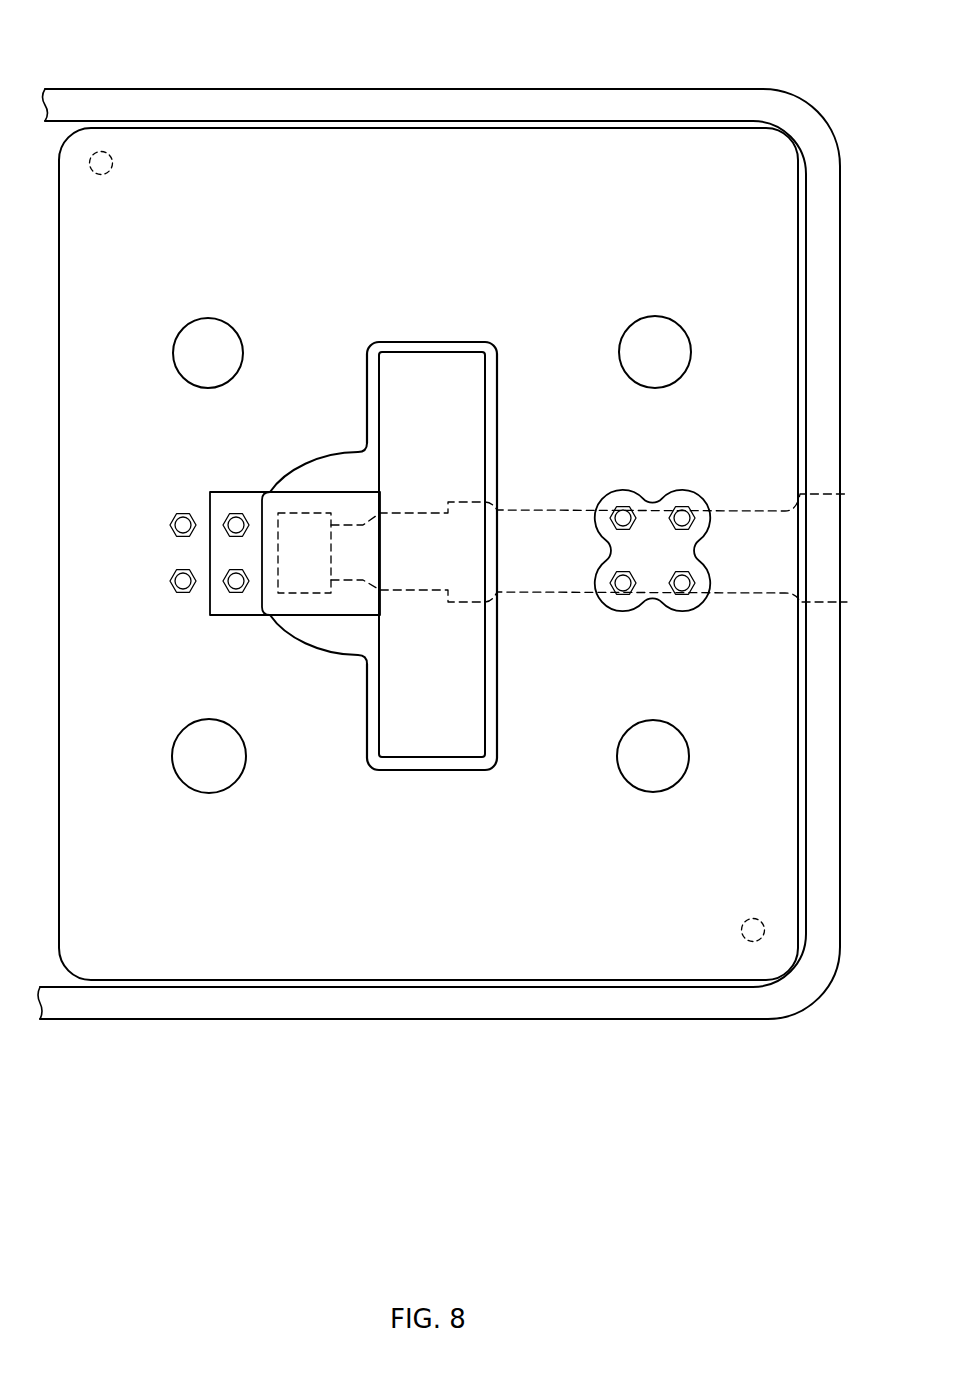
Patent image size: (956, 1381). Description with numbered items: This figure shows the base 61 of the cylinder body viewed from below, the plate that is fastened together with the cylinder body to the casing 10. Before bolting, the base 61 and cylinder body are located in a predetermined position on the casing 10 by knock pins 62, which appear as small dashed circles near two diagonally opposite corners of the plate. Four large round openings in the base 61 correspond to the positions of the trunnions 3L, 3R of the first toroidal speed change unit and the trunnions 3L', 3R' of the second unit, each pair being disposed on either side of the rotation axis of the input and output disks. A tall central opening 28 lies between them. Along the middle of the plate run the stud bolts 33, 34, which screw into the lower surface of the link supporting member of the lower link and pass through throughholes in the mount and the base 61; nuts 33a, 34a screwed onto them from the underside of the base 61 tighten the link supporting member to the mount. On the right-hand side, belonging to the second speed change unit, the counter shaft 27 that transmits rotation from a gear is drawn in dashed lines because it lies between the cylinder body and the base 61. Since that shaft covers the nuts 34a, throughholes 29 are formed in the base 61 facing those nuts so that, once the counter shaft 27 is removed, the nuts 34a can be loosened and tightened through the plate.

The casing 10 is at (418, 88).
The base of the cylinder body 61 is at (148, 240).
The knock pins 62 is at (92, 152).
The trunnion 3R is at (221, 214).
The trunnion 3R' is at (756, 335).
The trunnion 3L is at (213, 899).
The trunnion 3L' is at (634, 899).
The opening 28 is at (435, 405).
The throughholes 29 is at (607, 496).
The counter shaft 27 is at (750, 595).
The stud bolt 33 is at (181, 512).
The nut 33a is at (170, 525).
The stud bolt 34 is at (232, 511).
The nut 34a is at (247, 515).